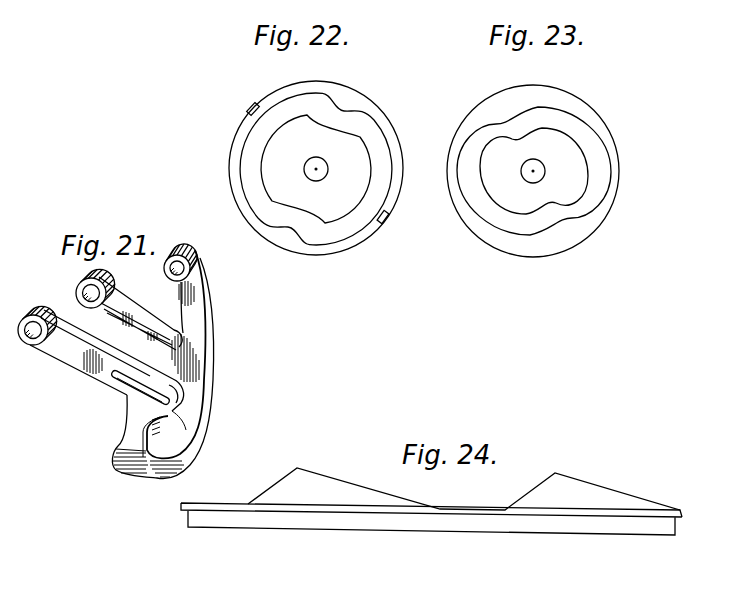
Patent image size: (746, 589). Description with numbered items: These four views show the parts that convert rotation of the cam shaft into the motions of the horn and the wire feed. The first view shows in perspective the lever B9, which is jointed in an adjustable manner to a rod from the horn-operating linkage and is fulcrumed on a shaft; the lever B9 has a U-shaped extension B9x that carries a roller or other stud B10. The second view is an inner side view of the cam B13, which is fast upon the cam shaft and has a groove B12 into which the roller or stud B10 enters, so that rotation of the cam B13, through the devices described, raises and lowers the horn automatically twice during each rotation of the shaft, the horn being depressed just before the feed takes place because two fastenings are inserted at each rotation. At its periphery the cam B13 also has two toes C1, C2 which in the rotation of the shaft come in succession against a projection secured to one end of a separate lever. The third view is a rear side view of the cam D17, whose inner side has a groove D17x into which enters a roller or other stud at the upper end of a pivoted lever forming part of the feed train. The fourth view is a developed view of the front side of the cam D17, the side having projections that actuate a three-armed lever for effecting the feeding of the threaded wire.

In FIG. 21, the lever B9 is at (83, 351).
In FIG. 21, the roller or other stud B10 is at (190, 264).
In FIG. 21, the U-shaped extension B9x is at (206, 361).
In FIG. 22, the groove B12 is at (246, 163).
In FIG. 22, the cam B13 is at (244, 206).
In FIG. 22, the toe C1 is at (256, 107).
In FIG. 22, the toe C2 is at (388, 220).
In FIG. 23, the cam D17 is at (602, 220).
In FIG. 24, the cam D17 is at (423, 524).
In FIG. 23, the groove D17x is at (600, 149).